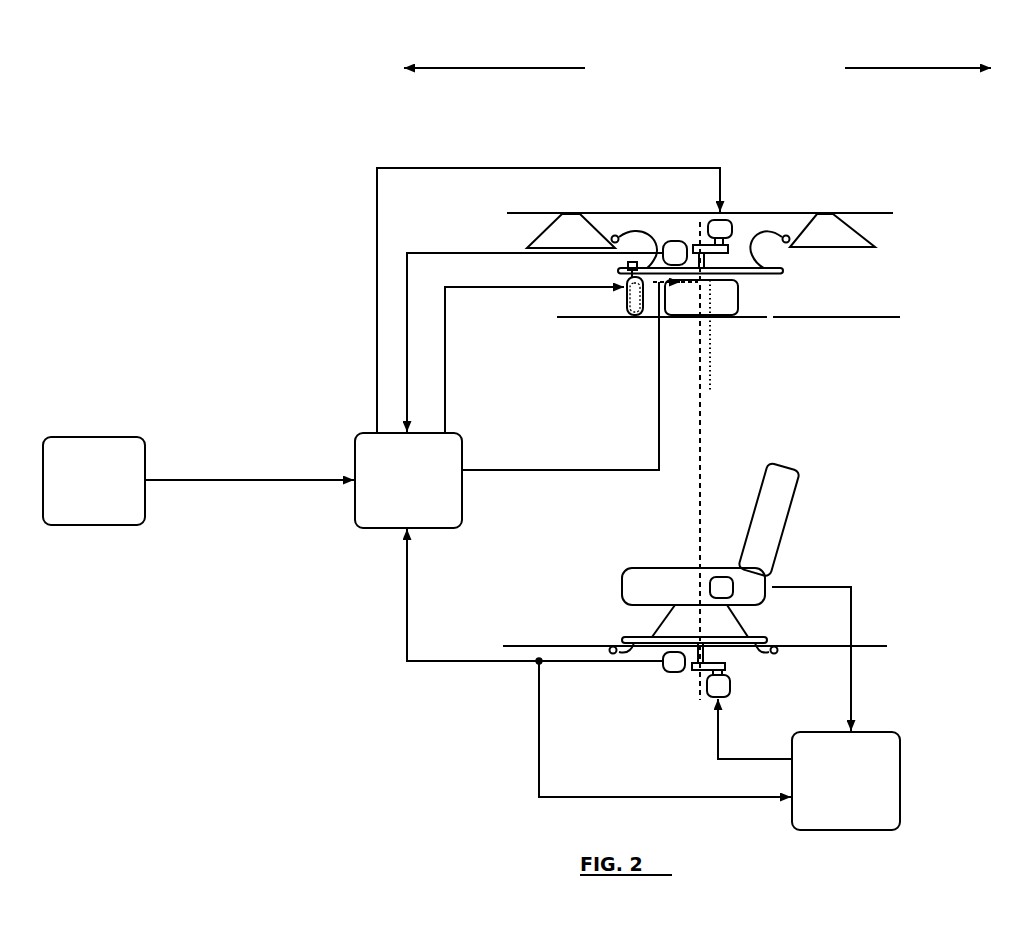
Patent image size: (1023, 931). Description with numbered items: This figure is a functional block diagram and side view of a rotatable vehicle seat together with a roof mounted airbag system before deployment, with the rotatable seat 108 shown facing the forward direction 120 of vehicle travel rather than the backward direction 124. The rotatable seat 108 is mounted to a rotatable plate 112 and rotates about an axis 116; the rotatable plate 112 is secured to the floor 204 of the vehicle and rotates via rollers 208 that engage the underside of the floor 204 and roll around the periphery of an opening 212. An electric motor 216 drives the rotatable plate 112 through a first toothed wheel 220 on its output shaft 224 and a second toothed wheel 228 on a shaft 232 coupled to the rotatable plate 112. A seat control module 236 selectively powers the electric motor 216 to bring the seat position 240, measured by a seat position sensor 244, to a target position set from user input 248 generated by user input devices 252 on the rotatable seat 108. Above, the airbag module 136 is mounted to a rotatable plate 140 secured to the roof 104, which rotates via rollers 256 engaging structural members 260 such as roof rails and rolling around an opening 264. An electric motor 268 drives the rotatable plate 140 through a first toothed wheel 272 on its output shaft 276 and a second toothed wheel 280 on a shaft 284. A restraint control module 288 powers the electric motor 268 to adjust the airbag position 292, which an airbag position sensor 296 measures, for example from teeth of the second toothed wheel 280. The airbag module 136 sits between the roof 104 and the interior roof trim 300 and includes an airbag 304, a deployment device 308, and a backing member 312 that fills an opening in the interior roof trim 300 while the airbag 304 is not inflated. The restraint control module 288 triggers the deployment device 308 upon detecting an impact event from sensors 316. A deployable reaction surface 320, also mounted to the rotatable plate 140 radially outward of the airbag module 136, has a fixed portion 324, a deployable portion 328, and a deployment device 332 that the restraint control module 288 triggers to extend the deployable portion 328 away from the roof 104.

The roof 104 is at (753, 212).
The rotatable seat 108 is at (787, 523).
The rotatable plate 112 is at (652, 645).
The axis 116 is at (698, 517).
The forward direction 120 is at (477, 68).
The backward direction 124 is at (930, 68).
The airbag module 136 is at (758, 329).
The rotatable plate 140 is at (765, 276).
The floor 204 is at (537, 645).
The rollers 208 is at (611, 653).
The opening 212 is at (616, 634).
The electric motor 216 is at (712, 700).
The first toothed wheel 220 is at (727, 667).
The output shaft 224 is at (730, 677).
The second toothed wheel 228 is at (695, 670).
The shaft 232 is at (705, 652).
The seat control module 236 is at (900, 780).
The seat position 240 is at (535, 665).
The seat position sensor 244 is at (663, 663).
The user input 248 is at (830, 587).
The user input devices 252 is at (712, 585).
The rollers 256 is at (612, 235).
The structural members 260 is at (573, 235).
The opening 264 is at (612, 260).
The electric motor 268 is at (731, 212).
The first toothed wheel 272 is at (730, 250).
The output shaft 276 is at (733, 234).
The second toothed wheel 280 is at (696, 244).
The shaft 284 is at (708, 260).
The restraint control module 288 is at (462, 448).
The airbag position 292 is at (492, 250).
The airbag position sensor 296 is at (677, 243).
The interior roof trim 300 is at (567, 320).
The airbag 304 is at (738, 300).
The deployment device 308 is at (731, 340).
The backing member 312 is at (743, 320).
The sensors 316 is at (95, 437).
The deployable reaction surface 320 is at (620, 328).
The fixed portion 324 is at (625, 302).
The deployable portion 328 is at (645, 316).
The deployment device 332 is at (624, 284).